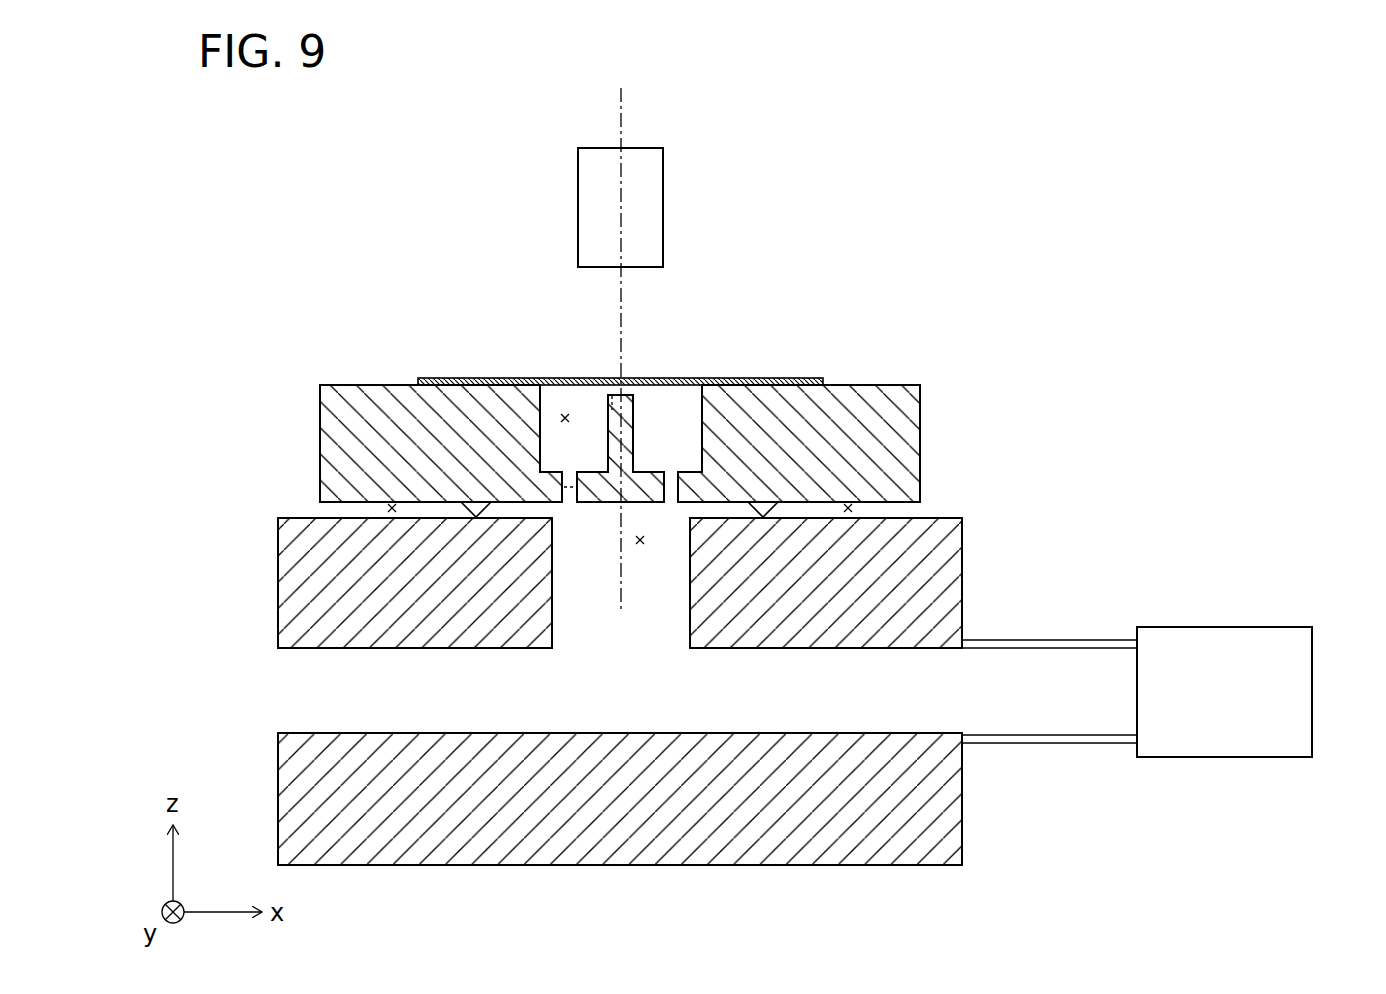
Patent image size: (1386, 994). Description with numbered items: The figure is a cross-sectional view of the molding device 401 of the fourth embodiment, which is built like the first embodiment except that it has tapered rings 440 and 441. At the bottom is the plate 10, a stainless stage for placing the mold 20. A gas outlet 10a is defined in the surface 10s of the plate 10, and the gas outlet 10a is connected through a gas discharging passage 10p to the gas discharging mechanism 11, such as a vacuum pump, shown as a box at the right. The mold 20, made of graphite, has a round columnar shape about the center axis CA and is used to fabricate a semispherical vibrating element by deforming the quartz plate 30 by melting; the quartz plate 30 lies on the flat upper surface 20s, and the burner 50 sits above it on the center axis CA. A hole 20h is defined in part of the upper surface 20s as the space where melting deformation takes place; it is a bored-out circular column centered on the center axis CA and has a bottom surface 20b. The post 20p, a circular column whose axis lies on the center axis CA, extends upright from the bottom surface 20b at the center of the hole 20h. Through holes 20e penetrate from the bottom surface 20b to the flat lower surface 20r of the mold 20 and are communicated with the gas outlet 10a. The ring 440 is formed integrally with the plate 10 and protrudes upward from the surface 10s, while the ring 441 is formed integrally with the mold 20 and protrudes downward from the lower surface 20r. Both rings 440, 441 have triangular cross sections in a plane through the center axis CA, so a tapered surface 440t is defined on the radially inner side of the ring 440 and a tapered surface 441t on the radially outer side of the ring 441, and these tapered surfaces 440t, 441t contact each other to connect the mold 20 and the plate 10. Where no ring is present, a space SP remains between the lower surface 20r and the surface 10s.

The molding device 401 is at (980, 87).
The center axis CA is at (618, 98).
The burner 50 is at (589, 177).
The mold 20 is at (893, 408).
The upper surface 20s is at (332, 385).
The post 20p is at (606, 393).
The hole 20h is at (563, 412).
The bottom surface 20b is at (656, 470).
The through holes 20e is at (558, 487).
The lower surface 20r is at (350, 496).
The quartz plate 30 is at (483, 380).
The ring 441 is at (480, 500).
The tapered surface 441t is at (391, 504).
The ring 440 is at (472, 519).
The tapered surface 440t is at (490, 520).
The space SP is at (457, 506).
The plate 10 is at (935, 560).
The surface 10s is at (927, 518).
The gas discharging passage 10p is at (936, 745).
The gas outlet 10a is at (640, 546).
The gas discharging mechanism 11 is at (1280, 642).